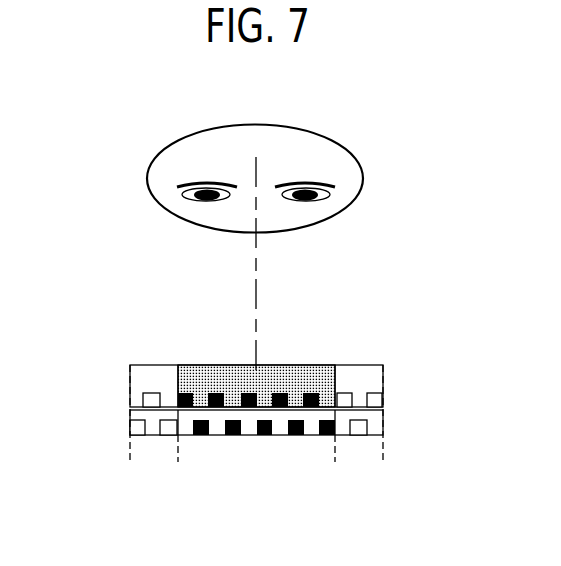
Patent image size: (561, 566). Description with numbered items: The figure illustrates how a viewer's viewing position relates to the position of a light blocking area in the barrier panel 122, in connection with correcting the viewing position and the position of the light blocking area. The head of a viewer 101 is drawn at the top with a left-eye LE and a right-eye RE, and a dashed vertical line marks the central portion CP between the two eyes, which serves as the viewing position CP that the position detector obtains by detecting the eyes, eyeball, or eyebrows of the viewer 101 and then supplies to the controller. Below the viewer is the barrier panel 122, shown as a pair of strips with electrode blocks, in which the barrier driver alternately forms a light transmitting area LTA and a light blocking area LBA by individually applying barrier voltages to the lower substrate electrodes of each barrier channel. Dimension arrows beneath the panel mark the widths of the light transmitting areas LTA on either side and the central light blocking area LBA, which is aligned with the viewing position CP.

The viewer 101 is at (376, 182).
The barrier panel 122 is at (112, 407).
The left-eye LE is at (180, 201).
The right-eye RE is at (328, 201).
The central portion CP is at (256, 305).
The light transmitting area LTA is at (177, 457).
The light blocking area LBA is at (334, 457).